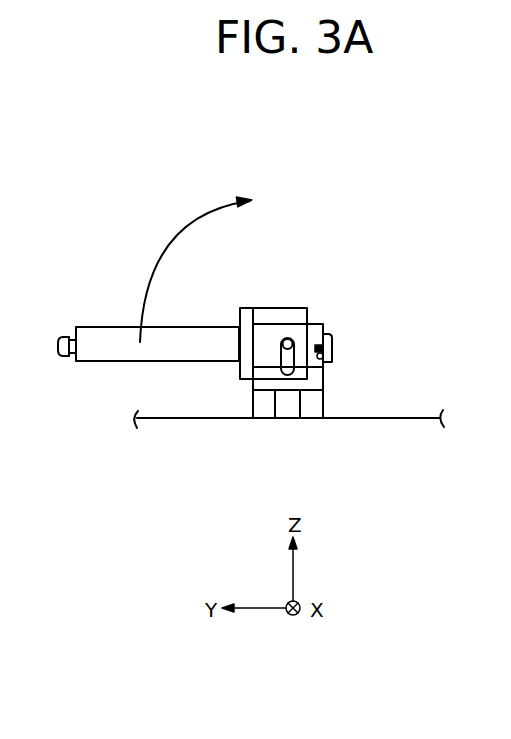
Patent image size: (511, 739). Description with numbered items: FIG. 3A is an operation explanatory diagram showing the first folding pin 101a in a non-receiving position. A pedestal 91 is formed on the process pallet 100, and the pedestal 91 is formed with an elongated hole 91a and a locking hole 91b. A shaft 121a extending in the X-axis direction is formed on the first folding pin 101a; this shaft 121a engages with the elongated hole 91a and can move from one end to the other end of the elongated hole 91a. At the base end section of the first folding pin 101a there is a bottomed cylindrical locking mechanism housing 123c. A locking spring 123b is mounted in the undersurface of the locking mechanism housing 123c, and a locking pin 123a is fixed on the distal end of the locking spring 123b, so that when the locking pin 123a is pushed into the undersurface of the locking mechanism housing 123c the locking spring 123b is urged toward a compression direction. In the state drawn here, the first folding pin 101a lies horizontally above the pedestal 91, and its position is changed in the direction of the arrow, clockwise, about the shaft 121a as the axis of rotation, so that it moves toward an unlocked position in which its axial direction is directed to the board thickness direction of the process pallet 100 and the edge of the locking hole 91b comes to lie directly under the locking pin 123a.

The process pallet 100 is at (415, 427).
The pedestal 91 is at (263, 385).
The elongated hole 91a is at (302, 366).
The locking hole 91b is at (273, 404).
The first folding pin 101a is at (122, 352).
The shaft 121a is at (288, 339).
The locking pin 123a is at (323, 357).
The locking spring 123b is at (324, 352).
The locking mechanism housing 123c is at (325, 349).